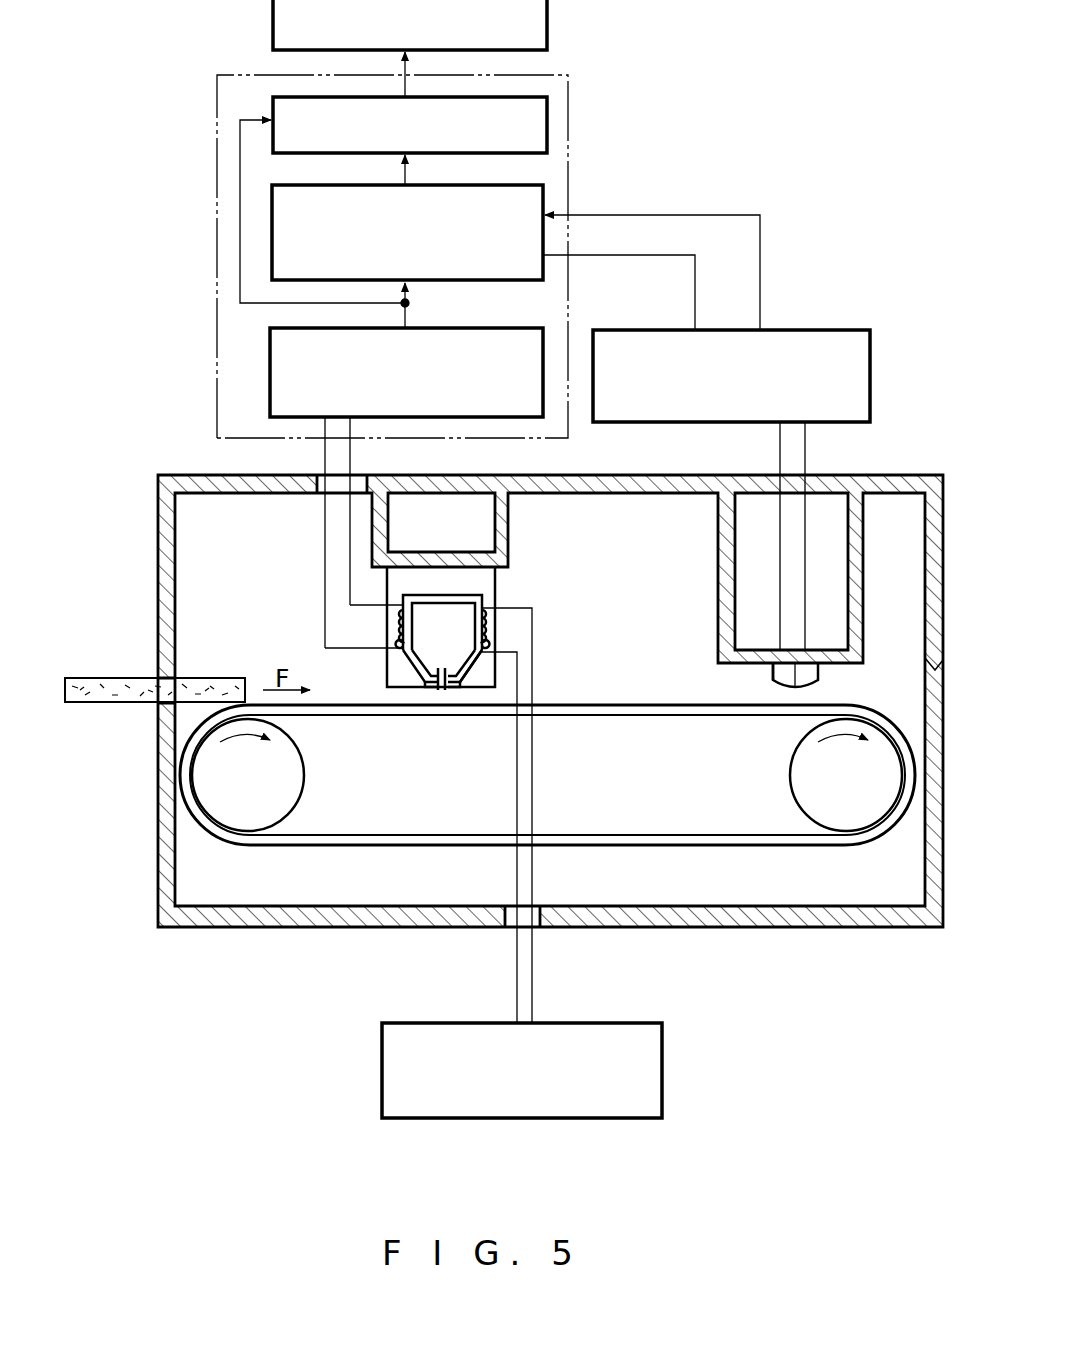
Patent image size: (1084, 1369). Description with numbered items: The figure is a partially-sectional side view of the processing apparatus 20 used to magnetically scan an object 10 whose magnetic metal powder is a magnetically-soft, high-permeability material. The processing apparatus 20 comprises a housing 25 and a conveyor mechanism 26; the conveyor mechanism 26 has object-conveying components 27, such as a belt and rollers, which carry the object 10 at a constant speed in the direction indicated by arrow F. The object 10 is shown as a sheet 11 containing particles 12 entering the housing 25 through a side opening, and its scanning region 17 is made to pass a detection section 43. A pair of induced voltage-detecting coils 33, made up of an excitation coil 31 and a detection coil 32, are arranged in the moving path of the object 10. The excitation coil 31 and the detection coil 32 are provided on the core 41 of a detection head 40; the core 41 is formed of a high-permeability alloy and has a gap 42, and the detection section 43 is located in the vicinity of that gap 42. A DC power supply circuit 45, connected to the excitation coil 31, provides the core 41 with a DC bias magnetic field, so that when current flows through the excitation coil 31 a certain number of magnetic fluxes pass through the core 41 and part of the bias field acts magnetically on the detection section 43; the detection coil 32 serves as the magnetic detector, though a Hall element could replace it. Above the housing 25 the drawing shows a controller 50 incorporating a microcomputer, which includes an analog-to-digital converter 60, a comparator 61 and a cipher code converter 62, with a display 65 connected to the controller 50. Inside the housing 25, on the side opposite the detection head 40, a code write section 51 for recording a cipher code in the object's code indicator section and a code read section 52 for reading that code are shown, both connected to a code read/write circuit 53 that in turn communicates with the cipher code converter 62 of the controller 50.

The object 10 is at (155, 683).
The sheet 11 is at (145, 678).
The magnetic fibers 12 is at (144, 704).
The scanning region 17 is at (222, 680).
The processing apparatus 20 is at (818, 210).
The housing 25 is at (883, 476).
The conveyor mechanism 26 is at (356, 849).
The object-conveying components 27 is at (637, 718).
The excitation coil 31 is at (512, 608).
The detection coil 32 is at (403, 626).
The induced voltage-detecting coils 33 is at (382, 728).
The detection head 40 is at (388, 680).
The core 41 is at (480, 665).
The gap 42 is at (437, 693).
The detection section 43 is at (448, 695).
The DC power supply circuit 45 is at (662, 1070).
The controller 50 is at (213, 226).
The code write section 51 is at (773, 675).
The code read section 52 is at (818, 672).
The code read/write circuit 53 is at (833, 330).
The analog-to-digital converter 60 is at (473, 328).
The comparator 61 is at (547, 122).
The cipher code converter 62 is at (545, 196).
The display 65 is at (547, 17).